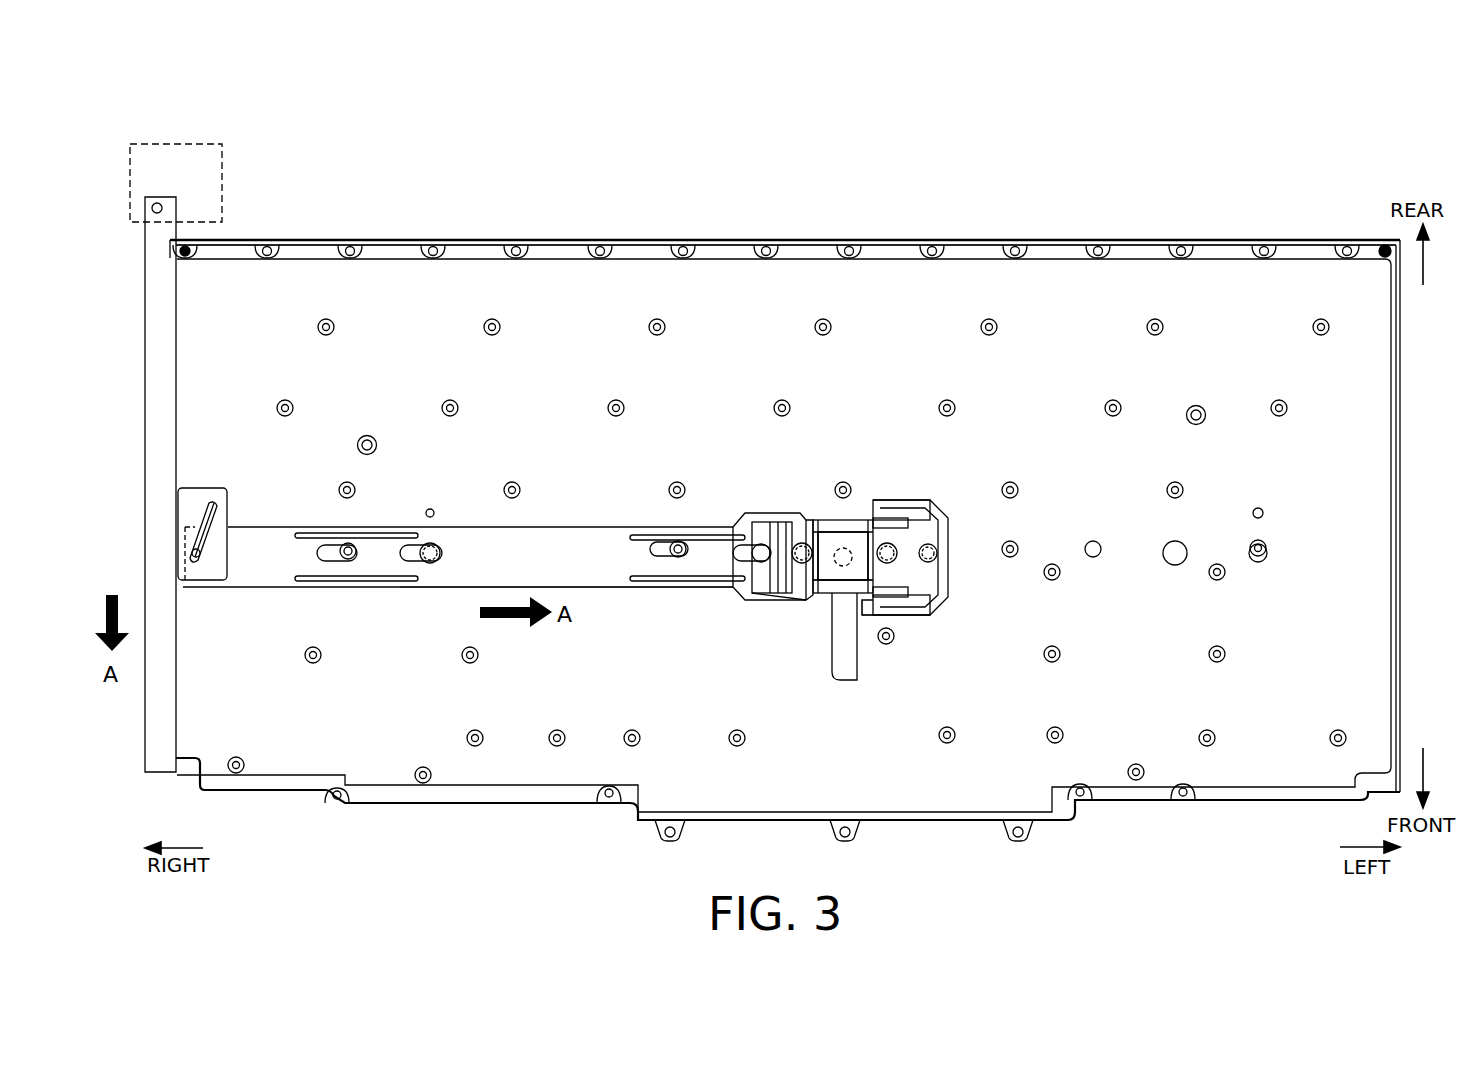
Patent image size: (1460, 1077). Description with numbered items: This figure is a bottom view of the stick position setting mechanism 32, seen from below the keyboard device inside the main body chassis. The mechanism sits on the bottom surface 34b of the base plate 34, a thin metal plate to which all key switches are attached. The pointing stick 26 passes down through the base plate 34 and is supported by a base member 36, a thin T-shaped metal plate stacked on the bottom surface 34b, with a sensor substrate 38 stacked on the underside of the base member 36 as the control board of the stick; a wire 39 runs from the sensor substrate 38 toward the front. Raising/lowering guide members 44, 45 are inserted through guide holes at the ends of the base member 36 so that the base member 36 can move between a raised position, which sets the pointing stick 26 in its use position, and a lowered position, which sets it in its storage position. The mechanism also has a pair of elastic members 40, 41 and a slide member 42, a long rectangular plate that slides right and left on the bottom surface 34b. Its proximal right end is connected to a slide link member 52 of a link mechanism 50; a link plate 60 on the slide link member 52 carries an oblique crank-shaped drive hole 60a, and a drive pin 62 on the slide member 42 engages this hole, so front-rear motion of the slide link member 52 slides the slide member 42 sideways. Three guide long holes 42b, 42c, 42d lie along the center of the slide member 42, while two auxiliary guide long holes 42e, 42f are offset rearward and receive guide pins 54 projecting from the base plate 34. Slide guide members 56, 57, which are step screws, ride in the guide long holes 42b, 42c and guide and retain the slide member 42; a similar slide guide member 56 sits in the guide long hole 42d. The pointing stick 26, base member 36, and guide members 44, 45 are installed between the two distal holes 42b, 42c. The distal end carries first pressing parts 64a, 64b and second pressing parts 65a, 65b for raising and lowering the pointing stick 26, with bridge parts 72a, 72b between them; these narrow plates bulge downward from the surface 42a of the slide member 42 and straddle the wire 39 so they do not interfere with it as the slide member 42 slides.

The pointing stick 26 is at (843, 548).
The stick position setting mechanism 32 is at (883, 462).
The base plate 34 is at (880, 236).
The bottom surface of the base plate 34b is at (713, 283).
The base member 36 is at (830, 595).
The sensor substrate 38 is at (843, 556).
The wire 39 is at (840, 652).
The elastic member 40 is at (900, 610).
The elastic member 41 is at (805, 590).
The slide member 42 is at (567, 520).
The surface of the slide member 42a is at (597, 572).
The guide long hole 42b is at (945, 527).
The guide long hole 42c is at (740, 517).
The guide long hole 42d is at (410, 560).
The auxiliary guide long hole 42e is at (668, 565).
The auxiliary guide long hole 42f is at (330, 537).
The raising/lowering guide member 44 is at (930, 510).
The raising/lowering guide member 45 is at (820, 533).
The link mechanism 50 is at (165, 143).
The slide link member 52 is at (158, 425).
The guide pin 54 is at (348, 560).
The slide guide member 56 is at (432, 545).
The slide guide member 57 is at (761, 543).
The link plate 60 is at (195, 505).
The drive hole 60a is at (219, 525).
The drive pin 62 is at (198, 555).
The first pressing part 64a is at (873, 612).
The first pressing part 64b is at (885, 522).
The second pressing part 65a is at (775, 598).
The second pressing part 65b is at (801, 543).
The bridge part 72a is at (836, 595).
The bridge part 72b is at (855, 520).